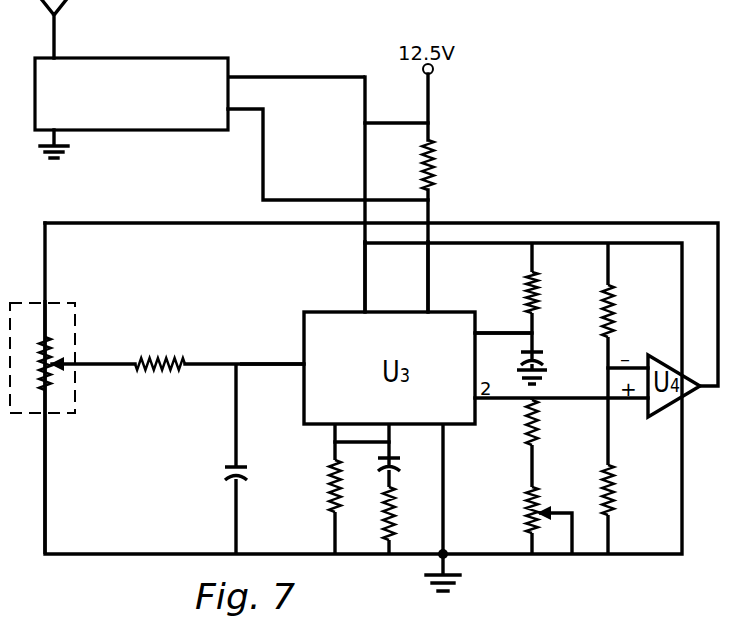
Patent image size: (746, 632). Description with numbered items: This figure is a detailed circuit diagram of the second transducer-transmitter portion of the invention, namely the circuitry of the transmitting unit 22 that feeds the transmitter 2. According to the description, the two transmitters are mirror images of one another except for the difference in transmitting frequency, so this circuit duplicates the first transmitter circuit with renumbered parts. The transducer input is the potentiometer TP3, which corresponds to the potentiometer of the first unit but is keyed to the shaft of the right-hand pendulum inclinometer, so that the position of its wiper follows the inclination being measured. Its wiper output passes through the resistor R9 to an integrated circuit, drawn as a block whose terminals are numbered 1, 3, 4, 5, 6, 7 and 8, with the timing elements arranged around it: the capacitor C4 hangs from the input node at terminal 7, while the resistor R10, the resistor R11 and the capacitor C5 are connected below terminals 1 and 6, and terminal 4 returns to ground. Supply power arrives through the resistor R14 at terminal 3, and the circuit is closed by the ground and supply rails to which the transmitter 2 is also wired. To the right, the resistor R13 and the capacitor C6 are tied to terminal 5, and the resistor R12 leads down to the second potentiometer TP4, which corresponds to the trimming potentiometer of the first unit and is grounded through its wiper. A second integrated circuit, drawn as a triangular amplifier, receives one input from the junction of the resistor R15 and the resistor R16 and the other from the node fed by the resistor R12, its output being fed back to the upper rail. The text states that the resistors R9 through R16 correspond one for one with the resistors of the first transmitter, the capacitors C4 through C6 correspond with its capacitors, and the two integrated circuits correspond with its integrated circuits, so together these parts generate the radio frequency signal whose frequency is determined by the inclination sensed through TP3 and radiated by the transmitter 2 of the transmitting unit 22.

The transmitter 2 is at (200, 94).
The transmitting unit 22 is at (33, 513).
The U3 pin 1 is at (326, 442).
The U3 pin 3 is at (418, 276).
The U3 pin 4 is at (452, 489).
The U3 pin 5 is at (503, 321).
The U3 pin 6 is at (397, 441).
The U3 pin 7 is at (272, 353).
The U3 pin 8 is at (356, 276).
The resistor R9 is at (160, 380).
The resistor R10 is at (314, 507).
The resistor R11 is at (406, 520).
The resistor R12 is at (551, 442).
The resistor R13 is at (552, 297).
The resistor R14 is at (448, 165).
The resistor R15 is at (628, 354).
The resistor R16 is at (627, 509).
The capacitor C4 is at (216, 459).
The capacitor C5 is at (406, 469).
The capacitor C6 is at (547, 362).
The potentiometer TP3 is at (70, 355).
The potentiometer TP4 is at (520, 520).